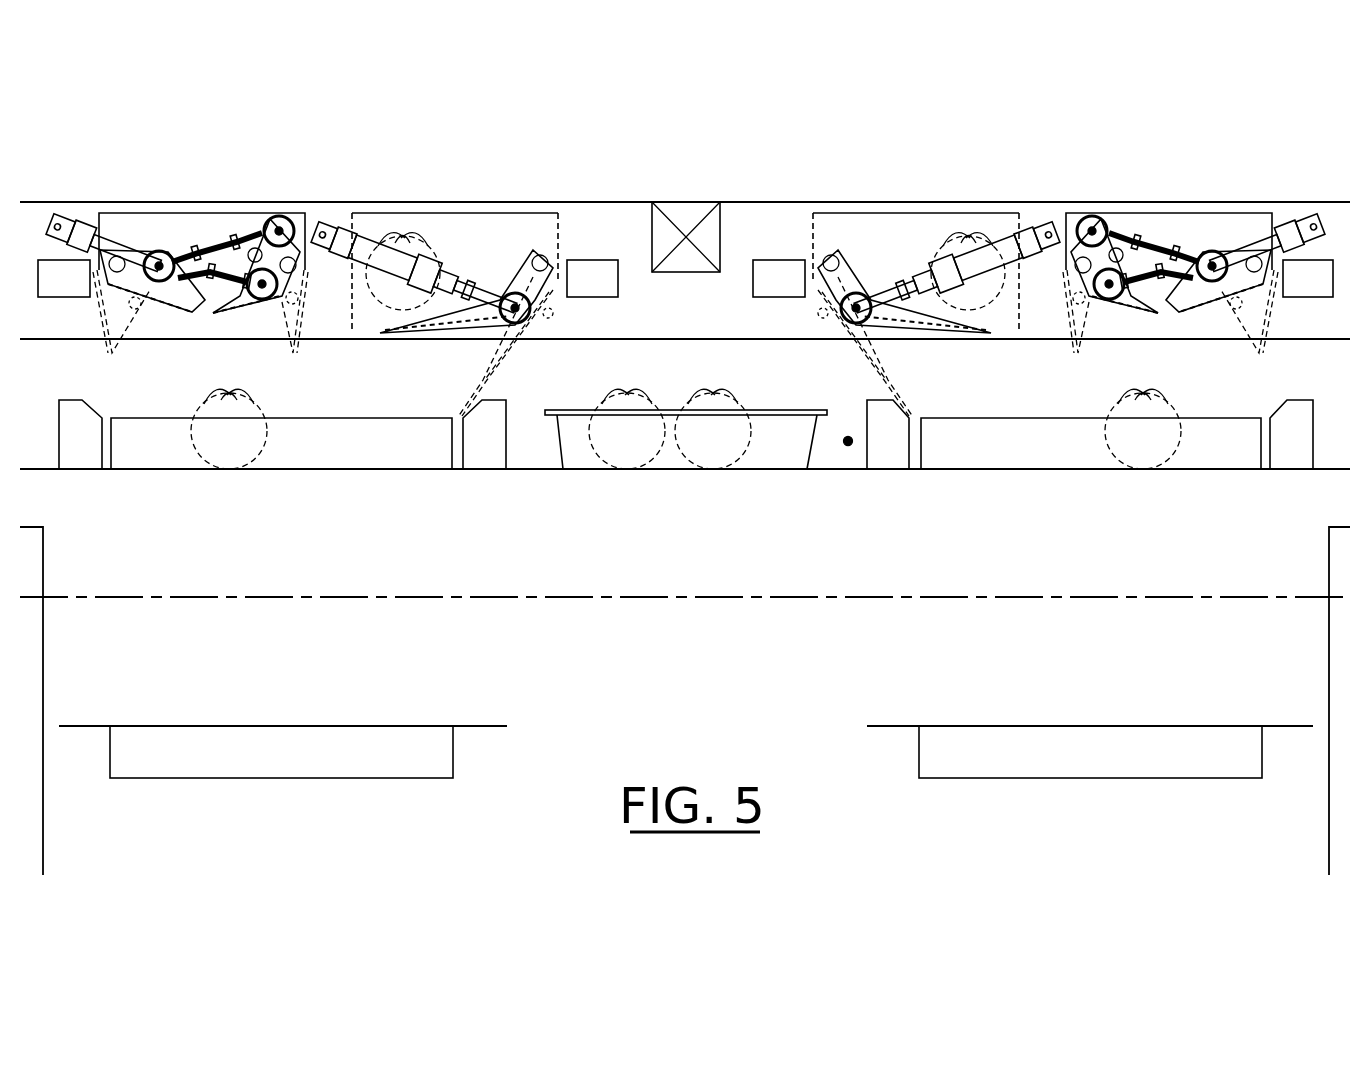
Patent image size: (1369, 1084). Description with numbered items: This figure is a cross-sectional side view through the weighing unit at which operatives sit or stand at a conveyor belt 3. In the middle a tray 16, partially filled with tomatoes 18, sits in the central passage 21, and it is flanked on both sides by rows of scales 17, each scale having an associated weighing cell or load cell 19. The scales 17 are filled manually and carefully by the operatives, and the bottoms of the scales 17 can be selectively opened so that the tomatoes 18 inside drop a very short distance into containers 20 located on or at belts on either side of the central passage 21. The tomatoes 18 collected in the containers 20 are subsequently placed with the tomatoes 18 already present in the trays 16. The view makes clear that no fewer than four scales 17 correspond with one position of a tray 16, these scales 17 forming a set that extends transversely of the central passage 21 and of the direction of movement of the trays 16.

The conveyor belt 3 is at (200, 470).
The tray 16 is at (570, 442).
The scale 17 is at (208, 223).
The tomato 18 is at (215, 402).
The load cell 19 is at (65, 290).
The container 20 is at (404, 430).
The central passage 21 is at (846, 445).